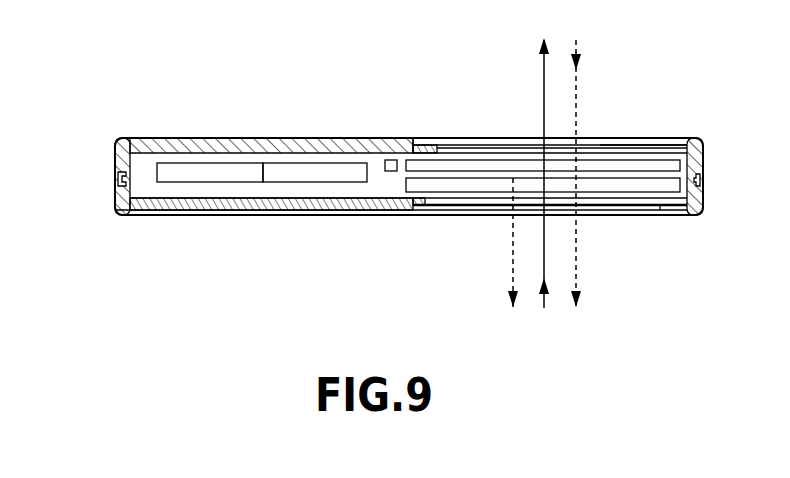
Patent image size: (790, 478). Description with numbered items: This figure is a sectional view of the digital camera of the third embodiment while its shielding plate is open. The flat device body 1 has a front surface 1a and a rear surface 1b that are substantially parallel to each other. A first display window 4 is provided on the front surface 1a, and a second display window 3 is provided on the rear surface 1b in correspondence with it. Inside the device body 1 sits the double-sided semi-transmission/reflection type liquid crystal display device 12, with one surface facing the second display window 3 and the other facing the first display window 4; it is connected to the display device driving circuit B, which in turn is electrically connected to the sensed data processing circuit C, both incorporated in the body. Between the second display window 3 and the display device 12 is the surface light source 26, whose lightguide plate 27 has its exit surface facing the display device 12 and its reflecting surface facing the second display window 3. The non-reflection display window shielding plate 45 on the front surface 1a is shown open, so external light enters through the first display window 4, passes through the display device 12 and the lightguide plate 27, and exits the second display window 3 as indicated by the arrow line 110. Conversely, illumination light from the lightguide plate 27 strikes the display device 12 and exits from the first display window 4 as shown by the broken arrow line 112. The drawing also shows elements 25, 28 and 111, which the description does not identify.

The device body 1 is at (110, 182).
The front surface 1a is at (130, 215).
The rear surface 1b is at (183, 138).
The display device driving circuit B is at (215, 163).
The sensed data processing circuit C is at (288, 163).
The second display window 3 is at (463, 148).
The first display window 4 is at (660, 205).
The semi-transmission/reflection type liquid crystal display device 12 is at (622, 185).
The lower sheet 25 is at (446, 215).
The surface light source 26 is at (631, 150).
The lightguide plate 27 is at (440, 165).
The light source 28 is at (391, 160).
The non-reflection display window shielding plate 45 is at (267, 210).
The arrow line 110 is at (543, 98).
The incident light 111 is at (578, 268).
The broken arrow line 112 is at (511, 268).